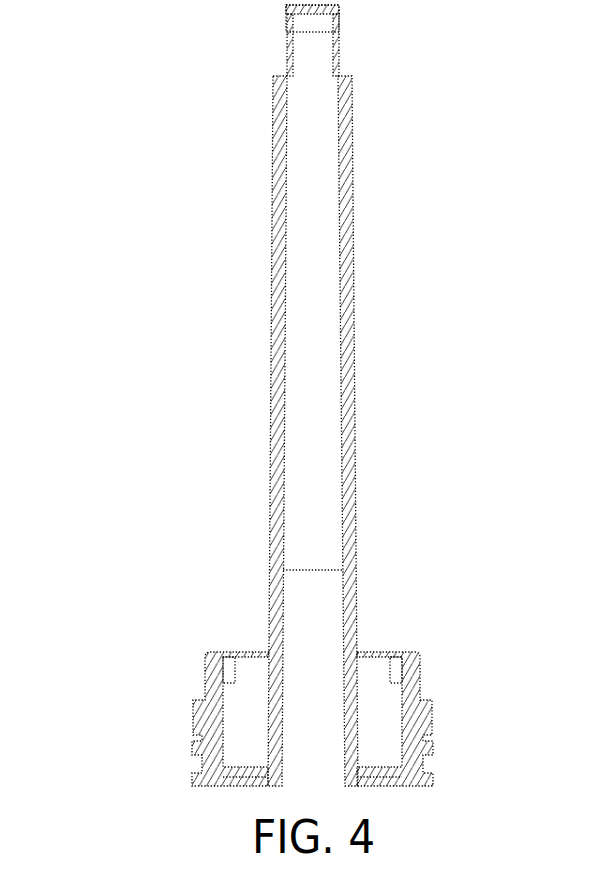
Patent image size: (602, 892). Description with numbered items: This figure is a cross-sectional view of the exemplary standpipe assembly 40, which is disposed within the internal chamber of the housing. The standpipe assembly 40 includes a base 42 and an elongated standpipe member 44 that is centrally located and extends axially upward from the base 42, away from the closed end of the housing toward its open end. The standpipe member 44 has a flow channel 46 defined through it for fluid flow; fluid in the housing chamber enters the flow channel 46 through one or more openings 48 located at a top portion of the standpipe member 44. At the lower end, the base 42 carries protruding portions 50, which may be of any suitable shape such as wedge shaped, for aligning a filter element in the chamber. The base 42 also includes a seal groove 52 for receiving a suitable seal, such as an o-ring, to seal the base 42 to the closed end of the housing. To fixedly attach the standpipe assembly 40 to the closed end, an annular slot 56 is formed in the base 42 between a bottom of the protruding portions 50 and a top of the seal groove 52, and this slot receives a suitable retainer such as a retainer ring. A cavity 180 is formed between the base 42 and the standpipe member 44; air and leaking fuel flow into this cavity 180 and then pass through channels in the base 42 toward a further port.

The fluid transfer device assembly 40 is at (514, 160).
The base housing 42 is at (429, 700).
The elongated tube 44 is at (351, 305).
The lumen 46 is at (322, 378).
The tip cap 48 is at (334, 52).
The outer wall flange 50 is at (202, 718).
The bottom flange 52 is at (422, 764).
The retaining lip 56 is at (421, 738).
The annular cavity 180 is at (388, 717).